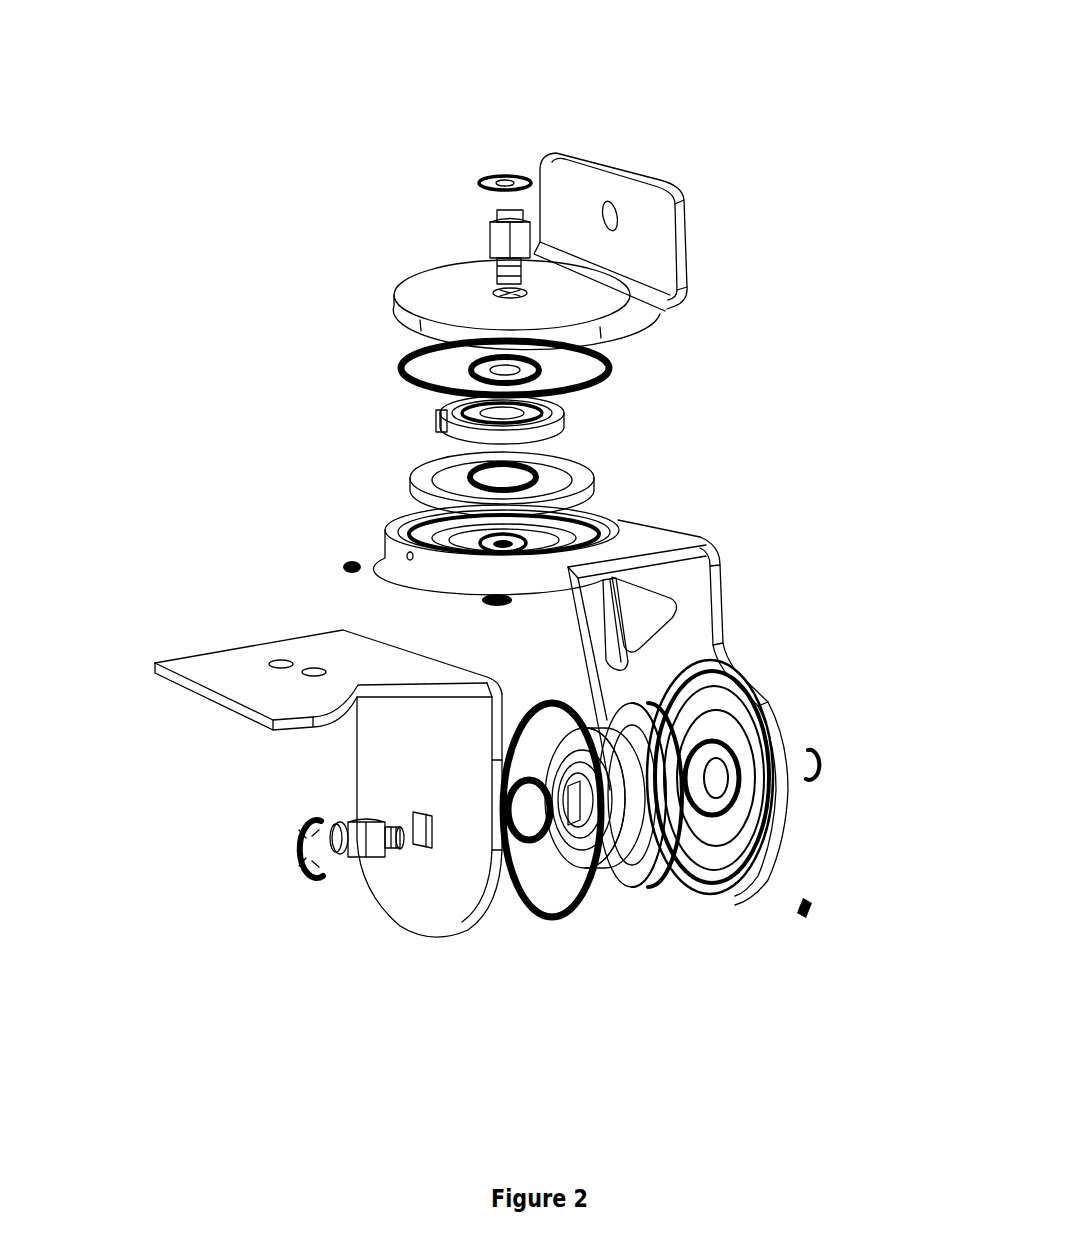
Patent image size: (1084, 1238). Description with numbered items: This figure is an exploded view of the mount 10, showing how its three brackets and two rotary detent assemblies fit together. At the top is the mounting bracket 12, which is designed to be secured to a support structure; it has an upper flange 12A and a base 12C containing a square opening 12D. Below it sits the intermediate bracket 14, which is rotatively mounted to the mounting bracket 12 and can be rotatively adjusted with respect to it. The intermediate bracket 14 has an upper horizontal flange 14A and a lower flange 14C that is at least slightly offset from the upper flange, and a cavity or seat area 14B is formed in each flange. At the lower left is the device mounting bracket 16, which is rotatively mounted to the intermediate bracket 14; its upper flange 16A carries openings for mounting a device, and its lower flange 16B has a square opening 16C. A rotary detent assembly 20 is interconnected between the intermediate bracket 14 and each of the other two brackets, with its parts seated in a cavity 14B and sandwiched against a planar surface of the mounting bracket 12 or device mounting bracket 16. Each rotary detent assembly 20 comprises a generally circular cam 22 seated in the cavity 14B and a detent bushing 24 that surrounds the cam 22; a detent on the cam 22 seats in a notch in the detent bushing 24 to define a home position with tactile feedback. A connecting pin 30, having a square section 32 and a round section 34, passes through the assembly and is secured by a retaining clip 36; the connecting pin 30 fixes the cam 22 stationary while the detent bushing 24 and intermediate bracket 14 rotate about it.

The mount 10 is at (805, 278).
The mounting bracket 12 is at (647, 135).
The upper flange 12A is at (644, 238).
The base 12C is at (425, 298).
The square opening 12D is at (532, 301).
The intermediate bracket 14 is at (765, 562).
The upper horizontal flange 14A is at (641, 541).
The cavity or seat area 14B is at (578, 540).
The lower flange 14C is at (728, 621).
The device mounting bracket 16 is at (206, 733).
The upper flange 16A is at (222, 665).
The lower flange 16B is at (403, 745).
The square opening 16C is at (443, 848).
The rotary detent assembly 20 is at (365, 358).
The cam 22 is at (432, 420).
The detent bushing 24 is at (402, 480).
The connecting pin 30 is at (445, 135).
The square section 32 is at (482, 233).
The round section 34 is at (497, 277).
The retaining clip 36 is at (506, 172).